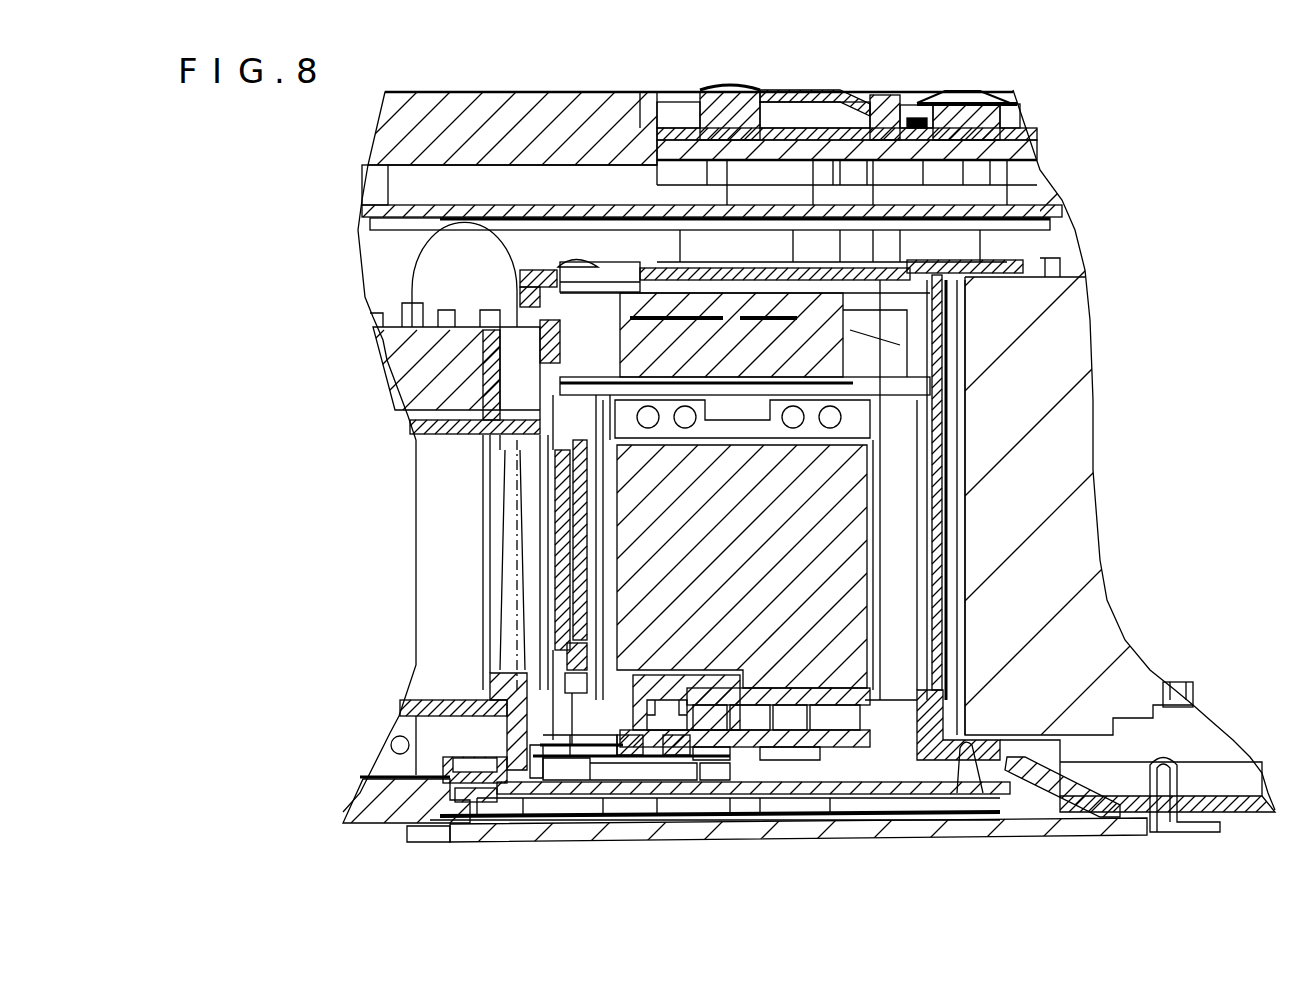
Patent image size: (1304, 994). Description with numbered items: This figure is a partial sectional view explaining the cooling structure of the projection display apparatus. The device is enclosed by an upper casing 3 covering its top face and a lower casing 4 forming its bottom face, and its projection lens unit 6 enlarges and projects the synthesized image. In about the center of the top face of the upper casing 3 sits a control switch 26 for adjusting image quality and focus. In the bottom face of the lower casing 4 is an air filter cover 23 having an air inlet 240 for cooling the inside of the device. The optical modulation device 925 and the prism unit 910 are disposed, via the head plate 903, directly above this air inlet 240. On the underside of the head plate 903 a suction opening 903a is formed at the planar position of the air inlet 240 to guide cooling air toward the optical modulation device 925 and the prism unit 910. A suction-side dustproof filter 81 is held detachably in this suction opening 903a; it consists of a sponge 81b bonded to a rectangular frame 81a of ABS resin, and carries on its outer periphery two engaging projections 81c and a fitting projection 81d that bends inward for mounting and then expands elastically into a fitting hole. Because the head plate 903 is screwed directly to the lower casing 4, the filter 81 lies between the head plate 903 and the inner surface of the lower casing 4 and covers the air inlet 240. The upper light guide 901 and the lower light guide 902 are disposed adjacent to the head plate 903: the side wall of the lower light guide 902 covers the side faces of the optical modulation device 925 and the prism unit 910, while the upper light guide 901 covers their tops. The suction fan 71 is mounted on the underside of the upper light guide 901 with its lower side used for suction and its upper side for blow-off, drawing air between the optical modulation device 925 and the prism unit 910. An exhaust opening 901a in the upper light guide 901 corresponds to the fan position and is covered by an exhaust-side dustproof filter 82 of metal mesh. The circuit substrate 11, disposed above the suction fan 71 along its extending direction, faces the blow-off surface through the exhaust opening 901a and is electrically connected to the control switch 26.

The upper casing 3 is at (497, 108).
The lower casing 4 is at (382, 807).
The projection lens unit 6 is at (1085, 408).
The circuit substrate 11 is at (362, 216).
The air filter cover 23 is at (912, 828).
The control switch 26 is at (790, 90).
The suction fan 71 is at (662, 330).
The suction-side dustproof filter 81 is at (607, 803).
The rectangular frame 81a is at (522, 803).
The sponge 81b is at (647, 790).
The engaging projections 81c is at (463, 803).
The fitting projection 81d is at (987, 817).
The exhaust-side dustproof filter 82 is at (866, 268).
The air inlet 240 is at (744, 832).
The upper light guide 901 is at (422, 433).
The exhaust opening 901a is at (700, 280).
The lower light guide 902 is at (400, 712).
The head plate 903 is at (973, 707).
The suction opening 903a is at (773, 765).
The prism unit 910 is at (845, 540).
The optical modulation device 925 is at (562, 556).